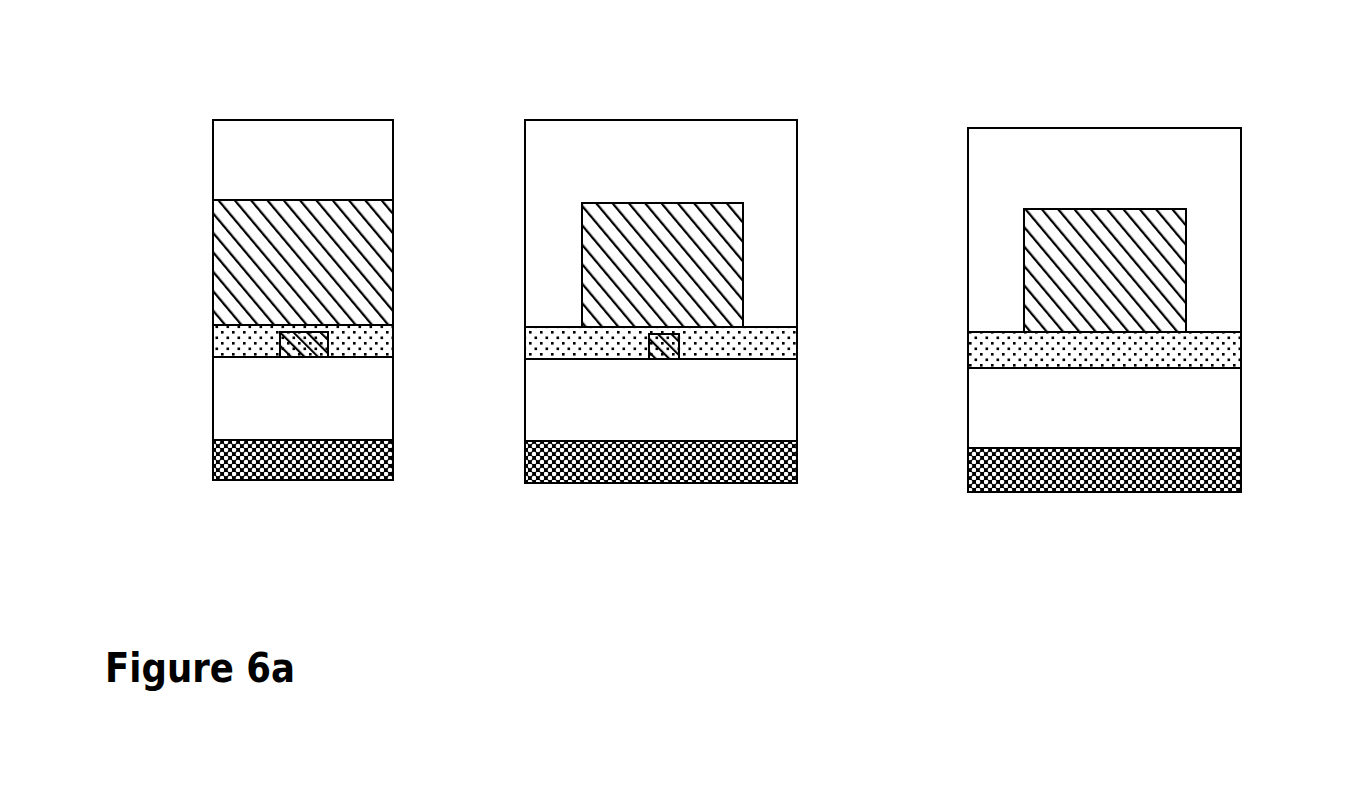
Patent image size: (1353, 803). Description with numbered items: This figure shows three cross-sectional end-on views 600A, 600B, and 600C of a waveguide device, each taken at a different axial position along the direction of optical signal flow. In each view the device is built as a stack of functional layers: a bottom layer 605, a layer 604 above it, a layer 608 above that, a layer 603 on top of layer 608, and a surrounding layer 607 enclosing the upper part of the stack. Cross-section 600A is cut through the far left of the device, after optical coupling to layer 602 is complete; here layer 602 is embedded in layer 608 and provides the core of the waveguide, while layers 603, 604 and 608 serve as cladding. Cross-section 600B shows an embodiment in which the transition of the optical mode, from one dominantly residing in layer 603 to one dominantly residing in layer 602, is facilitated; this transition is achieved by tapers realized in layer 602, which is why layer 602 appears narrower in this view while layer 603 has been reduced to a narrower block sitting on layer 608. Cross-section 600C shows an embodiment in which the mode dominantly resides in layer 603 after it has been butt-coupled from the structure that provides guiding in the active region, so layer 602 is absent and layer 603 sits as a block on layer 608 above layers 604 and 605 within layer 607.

The cross-sectional view 600A is at (251, 107).
The cross-sectional view 600B is at (588, 104).
The cross-sectional view 600C is at (1031, 112).
The layer 602 is at (328, 345).
The layer 603 is at (393, 262).
The layer 604 is at (393, 393).
The layer 605 is at (393, 450).
The layer 607 is at (250, 180).
The layer 608 is at (213, 347).